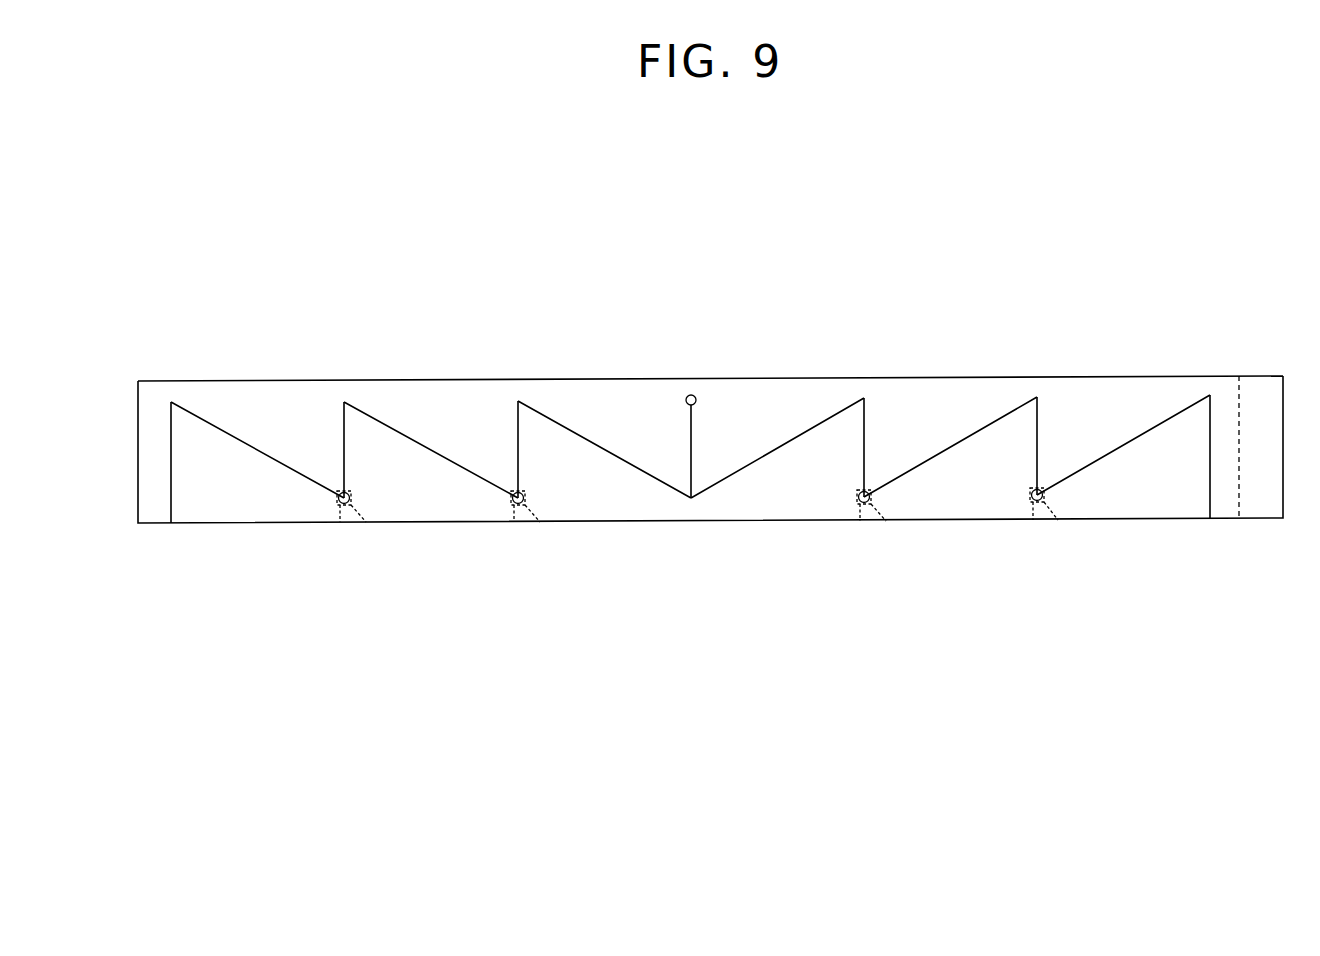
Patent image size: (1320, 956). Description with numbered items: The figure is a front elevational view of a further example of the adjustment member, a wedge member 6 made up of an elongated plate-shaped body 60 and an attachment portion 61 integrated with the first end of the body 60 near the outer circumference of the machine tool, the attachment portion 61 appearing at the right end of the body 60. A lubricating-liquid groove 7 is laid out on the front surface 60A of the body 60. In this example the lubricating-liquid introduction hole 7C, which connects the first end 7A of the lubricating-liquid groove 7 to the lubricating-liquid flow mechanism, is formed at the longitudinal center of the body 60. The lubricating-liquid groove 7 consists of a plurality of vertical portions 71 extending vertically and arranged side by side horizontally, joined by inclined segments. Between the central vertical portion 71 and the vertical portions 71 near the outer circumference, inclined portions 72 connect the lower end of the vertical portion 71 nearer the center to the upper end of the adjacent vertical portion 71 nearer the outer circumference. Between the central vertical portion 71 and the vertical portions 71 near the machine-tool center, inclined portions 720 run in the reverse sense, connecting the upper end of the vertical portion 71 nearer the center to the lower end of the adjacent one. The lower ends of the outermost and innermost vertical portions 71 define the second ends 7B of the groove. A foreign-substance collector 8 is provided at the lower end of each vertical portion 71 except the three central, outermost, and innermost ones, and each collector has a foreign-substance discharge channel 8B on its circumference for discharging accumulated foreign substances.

The wedge member 6 is at (958, 316).
The body 60 is at (491, 379).
The front surface 60A is at (893, 393).
The attachment portion 61 is at (1238, 393).
The lubricating-liquid groove 7 is at (827, 400).
The first end 7A is at (698, 404).
The second end 7B is at (170, 524).
The lubricating-liquid introduction hole 7C is at (690, 394).
The vertical portion 71 is at (175, 464).
The inclined portion 72 is at (790, 450).
The inclined portion 720 is at (273, 462).
The foreign-substance collector 8 is at (338, 500).
The foreign-substance discharge channel 8B is at (366, 523).